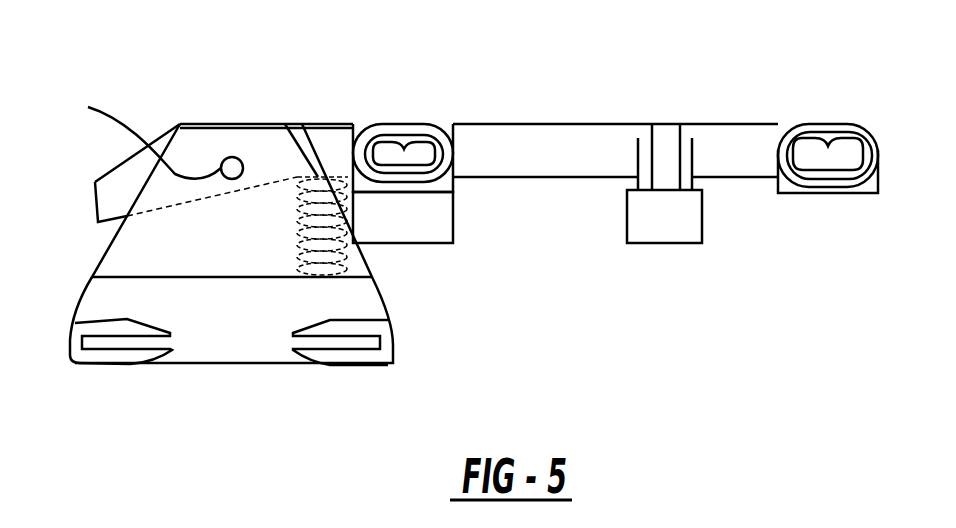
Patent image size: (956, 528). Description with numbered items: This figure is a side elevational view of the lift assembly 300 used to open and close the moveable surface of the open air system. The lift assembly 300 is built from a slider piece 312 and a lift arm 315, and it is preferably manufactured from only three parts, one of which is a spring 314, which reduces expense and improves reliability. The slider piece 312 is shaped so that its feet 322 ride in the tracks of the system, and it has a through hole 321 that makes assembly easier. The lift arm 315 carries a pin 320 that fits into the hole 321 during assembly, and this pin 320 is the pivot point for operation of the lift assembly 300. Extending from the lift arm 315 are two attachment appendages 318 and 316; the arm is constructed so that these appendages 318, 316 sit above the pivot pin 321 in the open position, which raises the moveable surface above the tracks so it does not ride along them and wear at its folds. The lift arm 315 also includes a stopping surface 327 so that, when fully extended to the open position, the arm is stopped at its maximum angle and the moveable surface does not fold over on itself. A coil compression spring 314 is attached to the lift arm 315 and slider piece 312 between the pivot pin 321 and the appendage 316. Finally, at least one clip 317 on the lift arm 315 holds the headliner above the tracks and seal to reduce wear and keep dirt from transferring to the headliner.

The lift assembly 300 is at (168, 72).
The slider piece 312 is at (82, 293).
The coil compression spring 314 is at (347, 250).
The lift arm 315 is at (585, 123).
The appendage 316 is at (425, 148).
The clip 317 is at (417, 227).
The appendage 318 is at (860, 133).
The pin 320 is at (237, 158).
The through hole 321 is at (134, 134).
The feet 322 is at (102, 366).
The stopping surface 327 is at (95, 210).